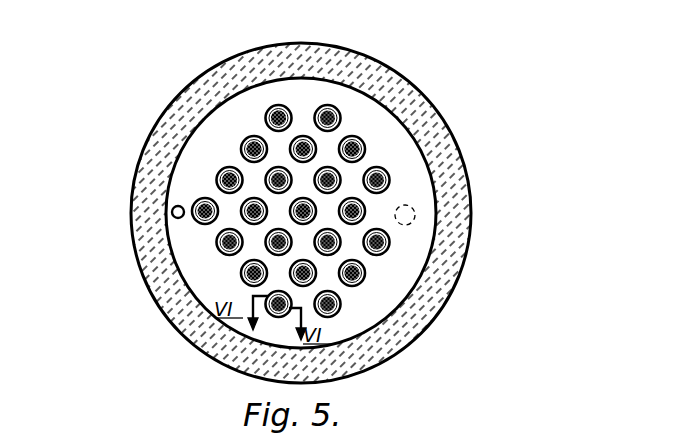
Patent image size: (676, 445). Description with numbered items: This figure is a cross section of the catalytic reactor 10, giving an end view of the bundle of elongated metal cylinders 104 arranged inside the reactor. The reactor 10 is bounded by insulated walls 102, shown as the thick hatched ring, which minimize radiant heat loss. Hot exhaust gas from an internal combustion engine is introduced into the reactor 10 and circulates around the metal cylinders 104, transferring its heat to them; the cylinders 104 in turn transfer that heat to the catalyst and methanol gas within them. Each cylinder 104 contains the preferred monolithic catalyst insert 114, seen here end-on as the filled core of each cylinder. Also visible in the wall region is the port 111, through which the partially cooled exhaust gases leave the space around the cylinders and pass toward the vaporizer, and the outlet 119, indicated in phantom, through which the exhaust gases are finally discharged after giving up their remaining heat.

The catalytic reactor 10 is at (156, 100).
The insulated walls 102 is at (417, 82).
The elongated metal cylinders 104 is at (270, 107).
The monolithic catalyst insert 114 is at (267, 112).
The port 111 is at (170, 211).
The outlet 119 is at (416, 216).